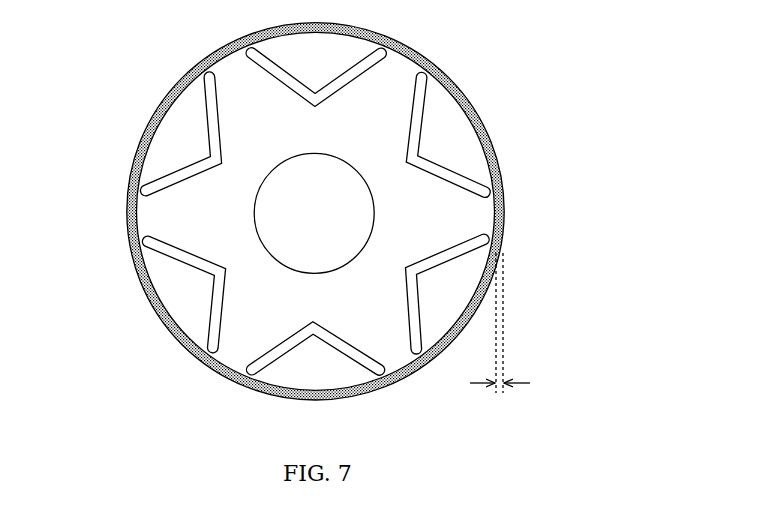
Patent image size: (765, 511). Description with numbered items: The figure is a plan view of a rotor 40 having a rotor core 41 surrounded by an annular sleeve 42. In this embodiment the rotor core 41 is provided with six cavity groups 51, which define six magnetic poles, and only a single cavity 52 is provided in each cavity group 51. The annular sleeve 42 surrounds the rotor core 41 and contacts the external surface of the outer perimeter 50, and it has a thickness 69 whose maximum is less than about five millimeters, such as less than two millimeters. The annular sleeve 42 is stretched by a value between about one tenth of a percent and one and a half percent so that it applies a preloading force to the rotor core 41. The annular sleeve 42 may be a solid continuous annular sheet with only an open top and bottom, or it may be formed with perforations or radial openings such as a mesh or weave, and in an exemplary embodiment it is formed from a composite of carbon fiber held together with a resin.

The rotor 40 is at (148, 360).
The rotor core 41 is at (222, 228).
The annular sleeve 42 is at (303, 211).
The outer perimeter 50 is at (418, 57).
The cavity group 51 is at (140, 113).
The cavity 52 is at (163, 245).
The thickness 69 is at (500, 395).